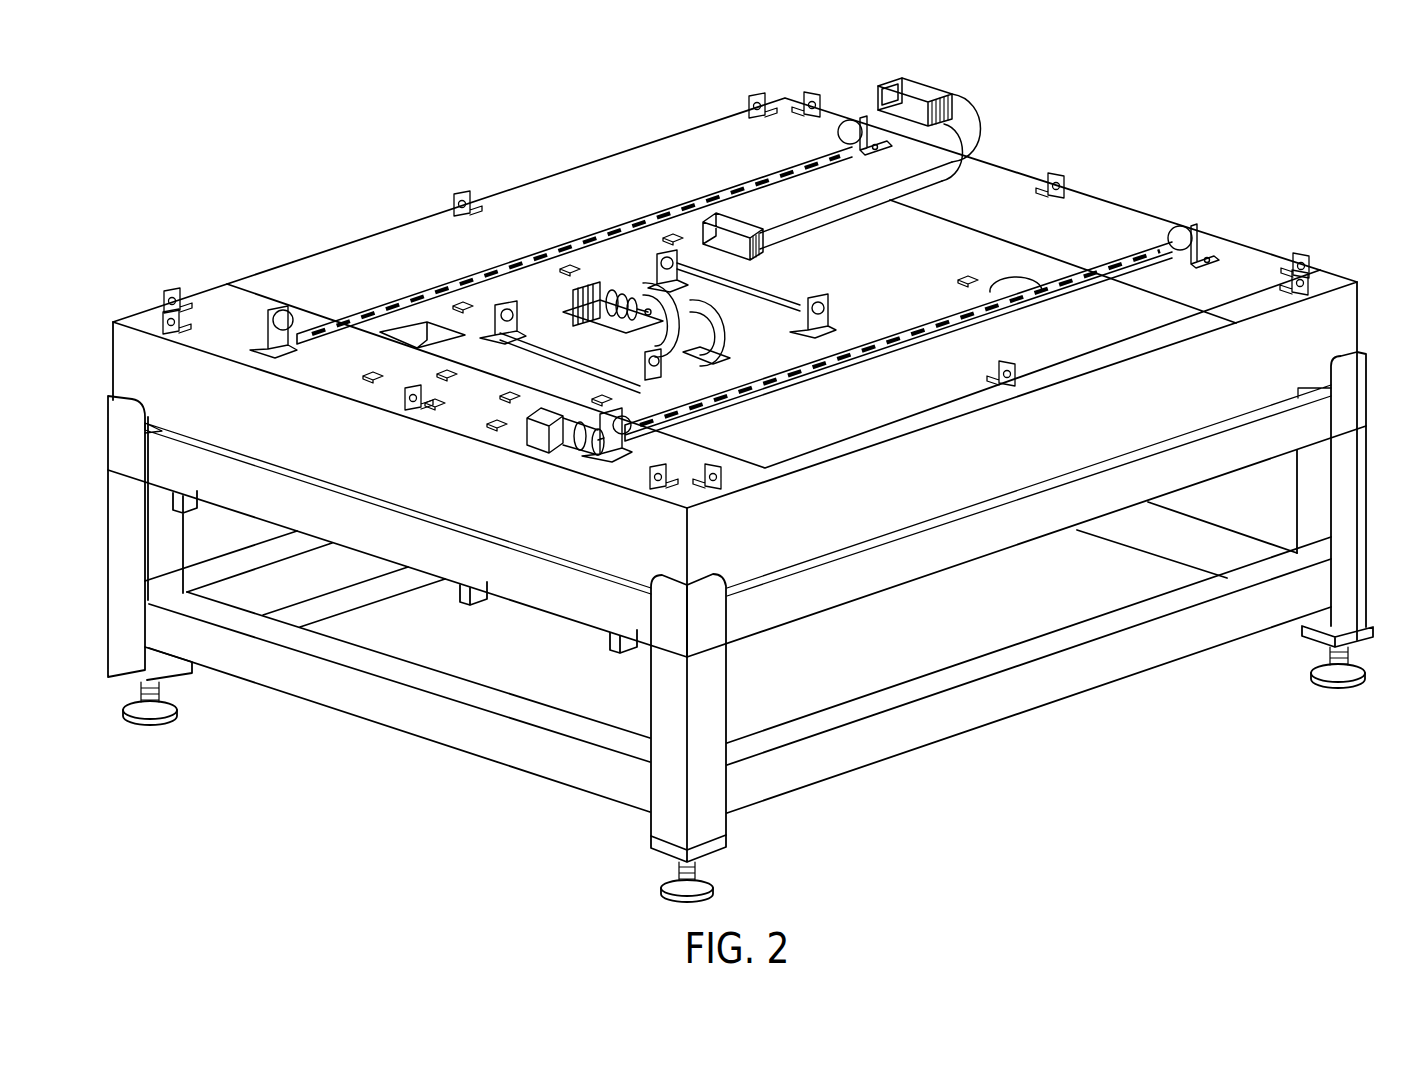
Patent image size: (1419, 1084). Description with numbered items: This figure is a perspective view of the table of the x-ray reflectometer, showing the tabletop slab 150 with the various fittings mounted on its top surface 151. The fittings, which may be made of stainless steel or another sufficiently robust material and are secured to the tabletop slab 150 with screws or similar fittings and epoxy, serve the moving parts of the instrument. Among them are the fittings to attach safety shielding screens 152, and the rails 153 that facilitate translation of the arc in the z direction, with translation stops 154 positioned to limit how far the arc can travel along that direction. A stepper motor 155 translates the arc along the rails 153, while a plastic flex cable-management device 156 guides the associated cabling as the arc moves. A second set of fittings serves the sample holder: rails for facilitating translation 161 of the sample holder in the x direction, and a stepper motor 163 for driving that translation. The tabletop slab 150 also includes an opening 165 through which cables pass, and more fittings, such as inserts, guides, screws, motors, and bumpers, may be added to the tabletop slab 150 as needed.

The tabletop slab 150 is at (1251, 371).
The top surface 151 is at (1215, 292).
The fittings to attach safety shielding screens 152 is at (1310, 275).
The rails 153 is at (752, 182).
The translation stops 154 is at (278, 316).
The stepper motor 155 is at (545, 437).
The plastic flex cable-management device 156 is at (978, 122).
The rails for facilitating translation 161 is at (775, 290).
The stepper motor 163 is at (573, 297).
The opening 165 is at (393, 343).